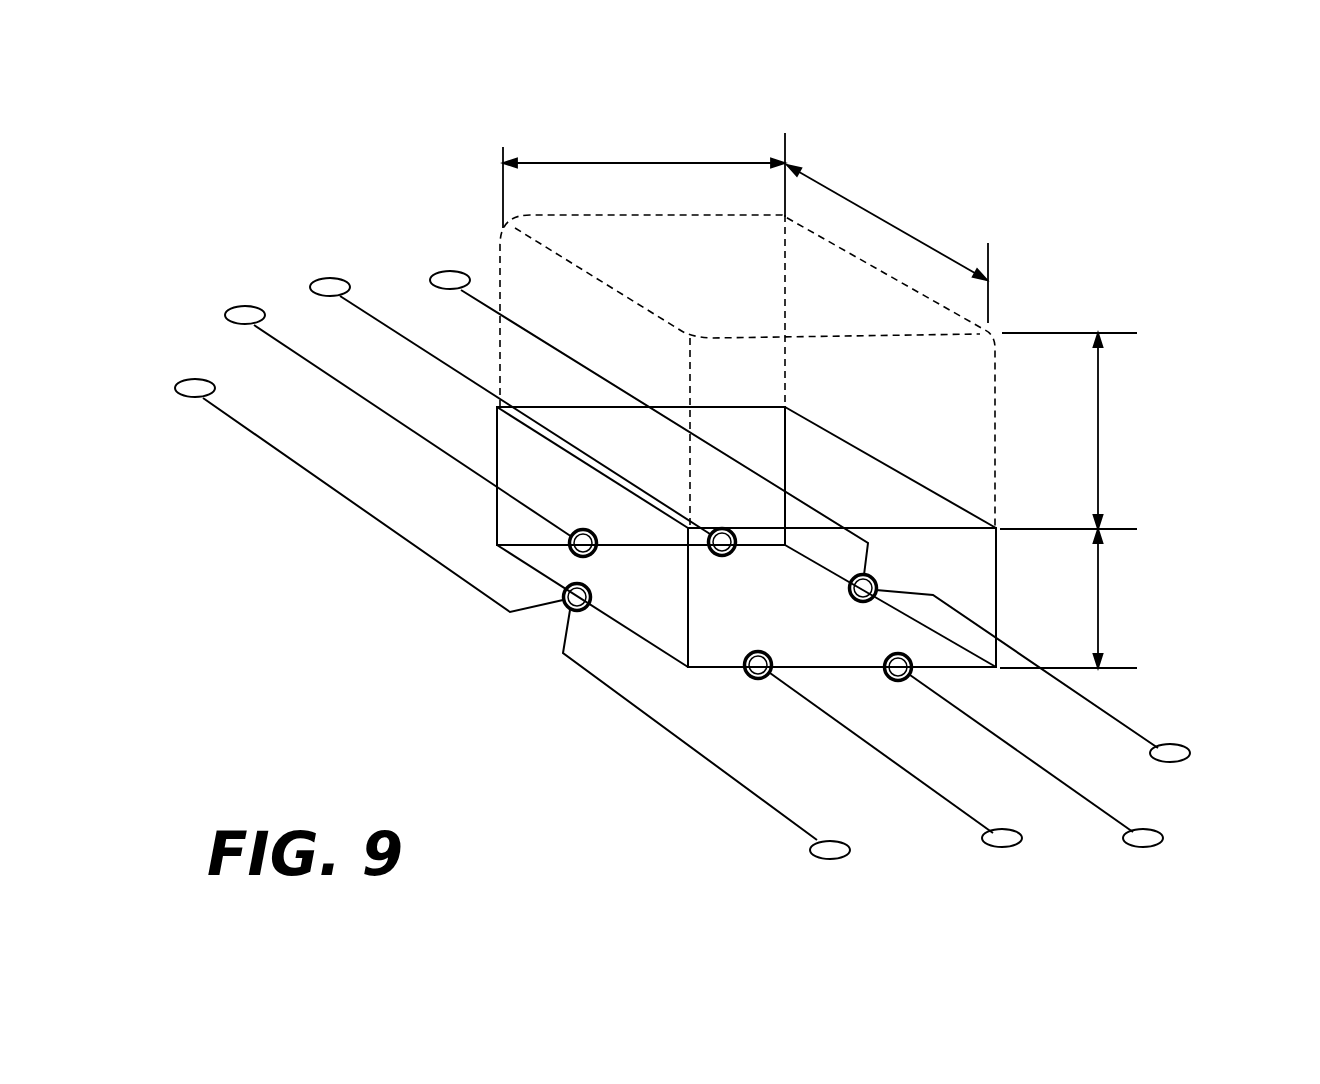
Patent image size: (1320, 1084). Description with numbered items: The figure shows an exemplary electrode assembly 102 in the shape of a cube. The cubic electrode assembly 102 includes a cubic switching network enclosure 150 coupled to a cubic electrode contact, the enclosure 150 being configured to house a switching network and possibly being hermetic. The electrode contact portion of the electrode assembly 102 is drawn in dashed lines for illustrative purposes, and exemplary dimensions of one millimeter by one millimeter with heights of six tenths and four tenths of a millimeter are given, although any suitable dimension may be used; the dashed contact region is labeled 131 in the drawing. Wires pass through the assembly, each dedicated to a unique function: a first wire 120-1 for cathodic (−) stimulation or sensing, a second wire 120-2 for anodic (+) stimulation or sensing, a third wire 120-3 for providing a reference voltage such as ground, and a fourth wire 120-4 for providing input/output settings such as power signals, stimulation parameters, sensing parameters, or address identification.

The electrode assembly 102 is at (915, 166).
The dome cap 131 is at (1004, 377).
The switching network enclosure 150 is at (629, 636).
The first wire 120-1 is at (215, 417).
The second wire 120-2 is at (283, 342).
The third wire 120-3 is at (480, 300).
The fourth wire 120-4 is at (358, 307).